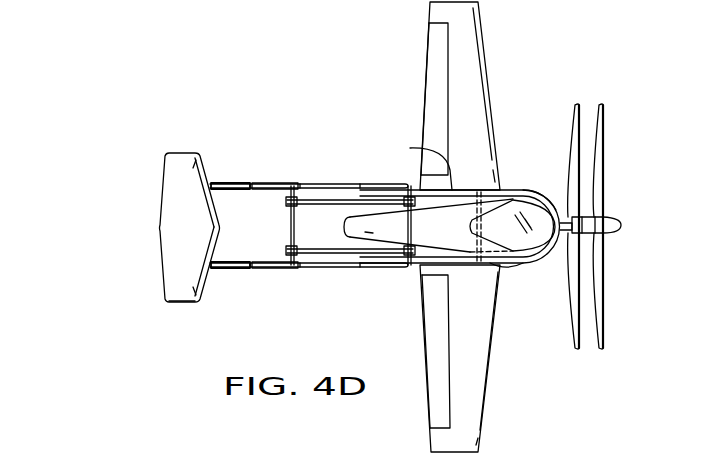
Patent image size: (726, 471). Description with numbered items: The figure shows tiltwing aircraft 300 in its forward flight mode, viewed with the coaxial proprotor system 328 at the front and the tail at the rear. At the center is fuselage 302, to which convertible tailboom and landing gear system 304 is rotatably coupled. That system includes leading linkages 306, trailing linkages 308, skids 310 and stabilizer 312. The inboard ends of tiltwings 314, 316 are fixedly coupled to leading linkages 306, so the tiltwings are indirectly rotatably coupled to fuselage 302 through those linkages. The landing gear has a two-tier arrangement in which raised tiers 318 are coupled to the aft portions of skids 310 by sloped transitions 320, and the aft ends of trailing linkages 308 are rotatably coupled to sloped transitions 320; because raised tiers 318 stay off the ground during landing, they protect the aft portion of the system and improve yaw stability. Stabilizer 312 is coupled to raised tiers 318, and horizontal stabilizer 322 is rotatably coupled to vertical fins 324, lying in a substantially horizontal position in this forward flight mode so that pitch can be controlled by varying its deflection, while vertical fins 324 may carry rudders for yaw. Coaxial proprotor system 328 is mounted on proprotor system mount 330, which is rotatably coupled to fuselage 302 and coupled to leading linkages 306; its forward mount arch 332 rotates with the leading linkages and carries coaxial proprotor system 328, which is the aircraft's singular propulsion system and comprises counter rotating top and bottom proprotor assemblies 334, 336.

The tiltwing aircraft 300 is at (276, 79).
The fuselage 302 is at (347, 220).
The convertible tailboom and landing gear system 304 is at (155, 185).
The leading linkages 306 is at (410, 148).
The trailing linkages 308 is at (332, 268).
The skids 310 is at (318, 183).
The stabilizer 312 is at (152, 233).
The tiltwing 314 is at (478, 45).
The tiltwing 316 is at (480, 405).
The raised tiers 318 is at (260, 183).
The sloped transitions 320 is at (290, 270).
The horizontal stabilizer 322 is at (162, 275).
The vertical fins 324 is at (233, 183).
The coaxial proprotor system 328 is at (630, 236).
The proprotor system mount 330 is at (508, 188).
The forward mount arch 332 is at (527, 265).
The top proprotor assembly 334 is at (612, 220).
The bottom proprotor assembly 336 is at (562, 198).